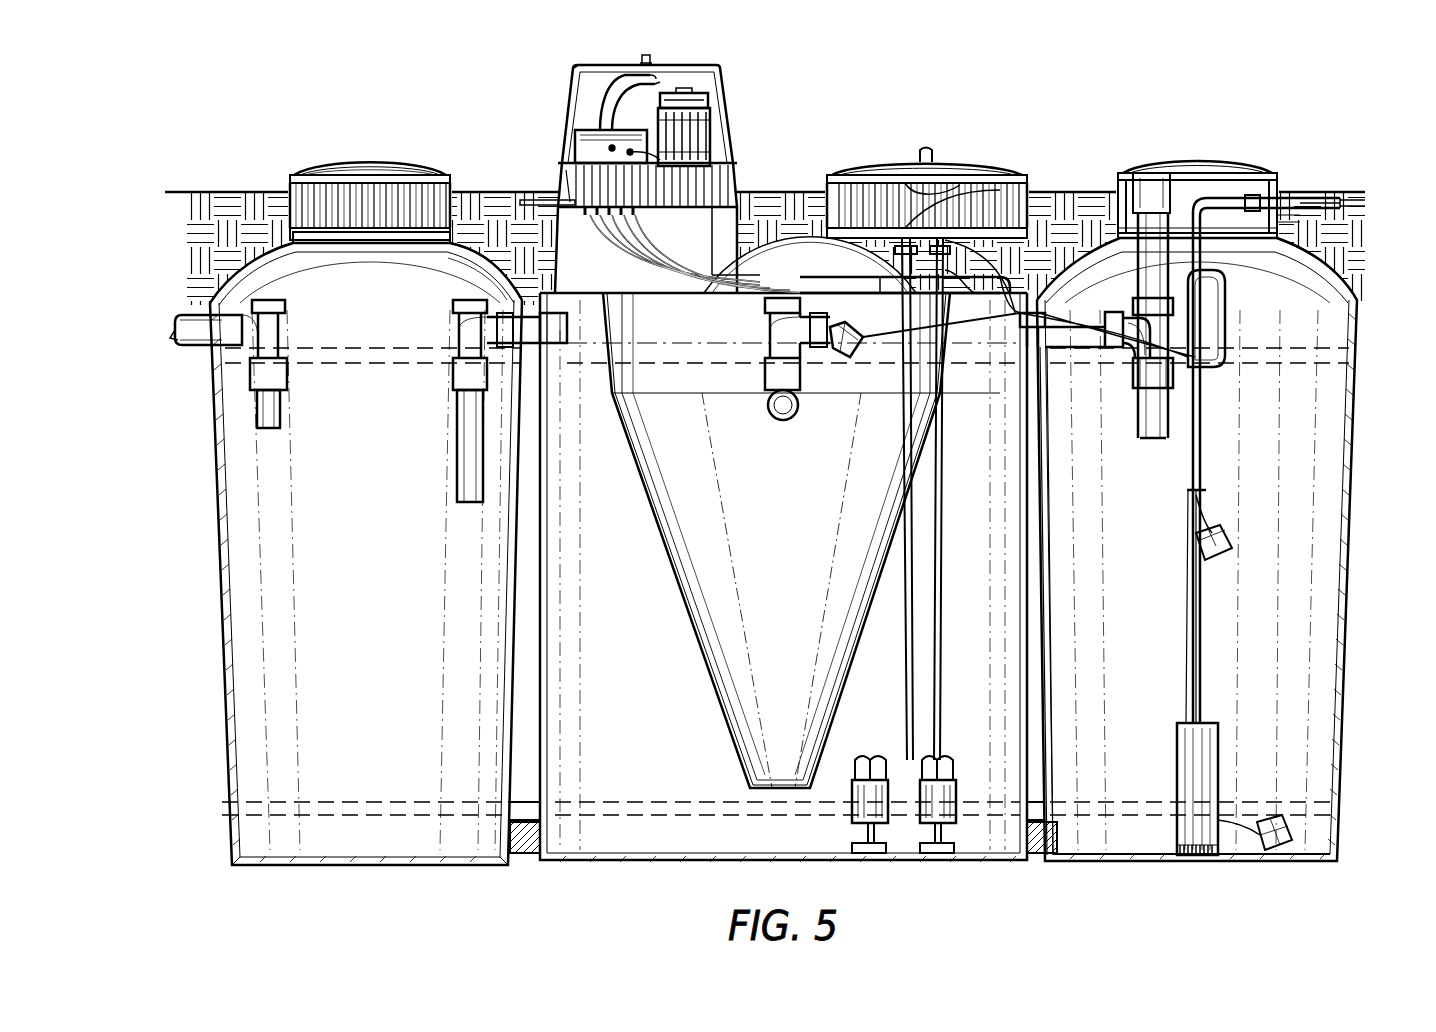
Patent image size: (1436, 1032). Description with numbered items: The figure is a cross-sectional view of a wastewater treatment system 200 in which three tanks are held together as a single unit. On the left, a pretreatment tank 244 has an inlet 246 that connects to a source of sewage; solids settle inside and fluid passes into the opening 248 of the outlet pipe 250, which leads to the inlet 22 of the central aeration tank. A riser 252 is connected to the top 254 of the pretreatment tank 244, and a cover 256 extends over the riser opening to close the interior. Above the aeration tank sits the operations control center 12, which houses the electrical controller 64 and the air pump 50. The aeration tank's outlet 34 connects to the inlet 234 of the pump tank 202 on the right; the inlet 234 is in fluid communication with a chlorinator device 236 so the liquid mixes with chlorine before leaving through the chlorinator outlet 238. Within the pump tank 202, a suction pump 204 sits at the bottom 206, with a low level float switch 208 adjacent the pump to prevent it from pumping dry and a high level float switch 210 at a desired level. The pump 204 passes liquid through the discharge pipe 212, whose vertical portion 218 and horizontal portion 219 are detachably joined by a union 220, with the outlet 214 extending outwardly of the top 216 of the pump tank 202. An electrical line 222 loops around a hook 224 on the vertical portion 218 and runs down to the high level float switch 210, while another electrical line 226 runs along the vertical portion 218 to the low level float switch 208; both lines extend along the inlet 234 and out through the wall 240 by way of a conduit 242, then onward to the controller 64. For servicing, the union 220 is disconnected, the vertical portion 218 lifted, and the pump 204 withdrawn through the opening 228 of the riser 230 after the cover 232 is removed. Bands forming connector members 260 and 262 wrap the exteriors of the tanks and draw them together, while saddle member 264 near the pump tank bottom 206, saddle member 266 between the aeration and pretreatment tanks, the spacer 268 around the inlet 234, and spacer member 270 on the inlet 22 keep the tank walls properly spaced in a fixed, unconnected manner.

The operations control center 12 is at (744, 84).
The inlet of the aeration tank 22 is at (550, 348).
The outlet of the aeration tank 34 is at (997, 283).
The air pump 50 is at (705, 132).
The electrical controller 64 is at (587, 145).
The wastewater treatment system 200 is at (1069, 102).
The pump tank 202 is at (1360, 278).
The suction pump 204 is at (1208, 736).
The bottom of the pump tank 206 is at (1285, 861).
The low level float switch 208 is at (1274, 812).
The high level float switch 210 is at (1228, 548).
The discharge pipe 212 is at (1198, 654).
The outlet 214 is at (1342, 204).
The top of the pump tank 216 is at (1275, 198).
The vertical portion 218 is at (1202, 471).
The horizontal portion 219 is at (1318, 200).
The union 220 is at (1250, 195).
The electrical line 222 is at (1223, 340).
The hook 224 is at (1223, 280).
The electrical line 226 is at (1181, 664).
The opening 228 is at (1183, 170).
The riser 230 is at (1292, 220).
The cover 232 is at (1150, 167).
The inlet of the pump tank 234 is at (1053, 340).
The chlorinator device 236 is at (1137, 273).
The outlet of the chlorinator 238 is at (1155, 442).
The wall of the pump tank 240 is at (1350, 570).
The conduit 242 is at (1030, 300).
The pretreatment tank 244 is at (225, 620).
The inlet of the pretreatment tank 246 is at (198, 318).
The opening 248 is at (470, 505).
The outlet pipe of the pretreatment tank 250 is at (495, 287).
The riser 252 is at (308, 198).
The top of the pretreatment tank 254 is at (470, 250).
The cover 256 is at (355, 158).
The connector member 260 is at (340, 800).
The connector member 262 is at (1310, 357).
The saddle member 264 is at (1047, 858).
The saddle member 266 is at (532, 858).
The spacer 268 is at (1047, 340).
The spacer member 270 is at (546, 392).